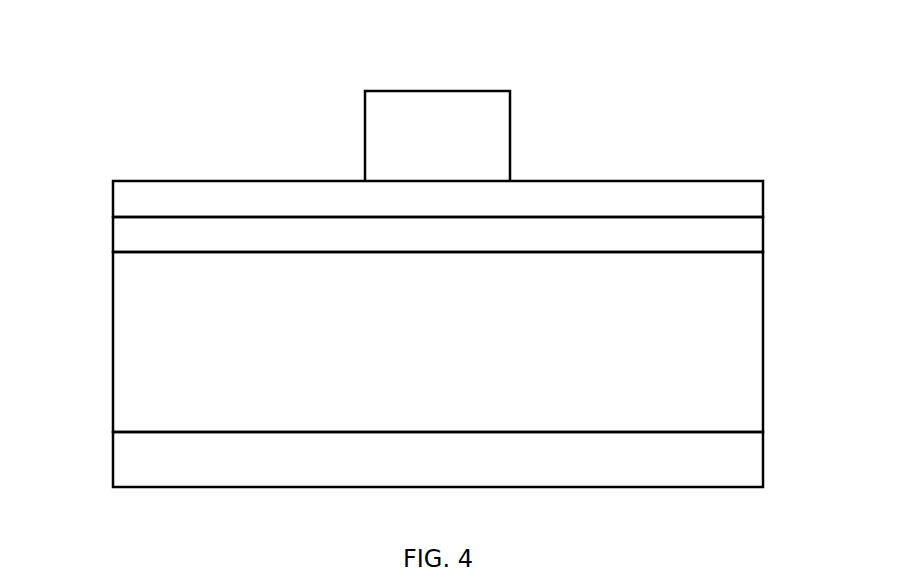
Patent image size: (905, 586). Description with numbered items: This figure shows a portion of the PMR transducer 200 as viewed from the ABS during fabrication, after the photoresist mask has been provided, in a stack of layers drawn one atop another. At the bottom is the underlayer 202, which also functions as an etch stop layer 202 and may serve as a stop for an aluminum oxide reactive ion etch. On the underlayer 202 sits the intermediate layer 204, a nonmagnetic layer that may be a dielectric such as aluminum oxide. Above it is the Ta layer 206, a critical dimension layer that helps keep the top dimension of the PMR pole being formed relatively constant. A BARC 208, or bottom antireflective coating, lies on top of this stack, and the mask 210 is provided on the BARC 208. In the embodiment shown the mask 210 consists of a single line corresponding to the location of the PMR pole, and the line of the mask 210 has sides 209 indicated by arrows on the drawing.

The PMR transducer 200 is at (460, 31).
The underlayer 202 is at (763, 470).
The intermediate layer 204 is at (763, 350).
The Ta layer 206 is at (763, 250).
The BARC 208 is at (113, 210).
The sides 209 is at (358, 145).
The mask 210 is at (473, 91).